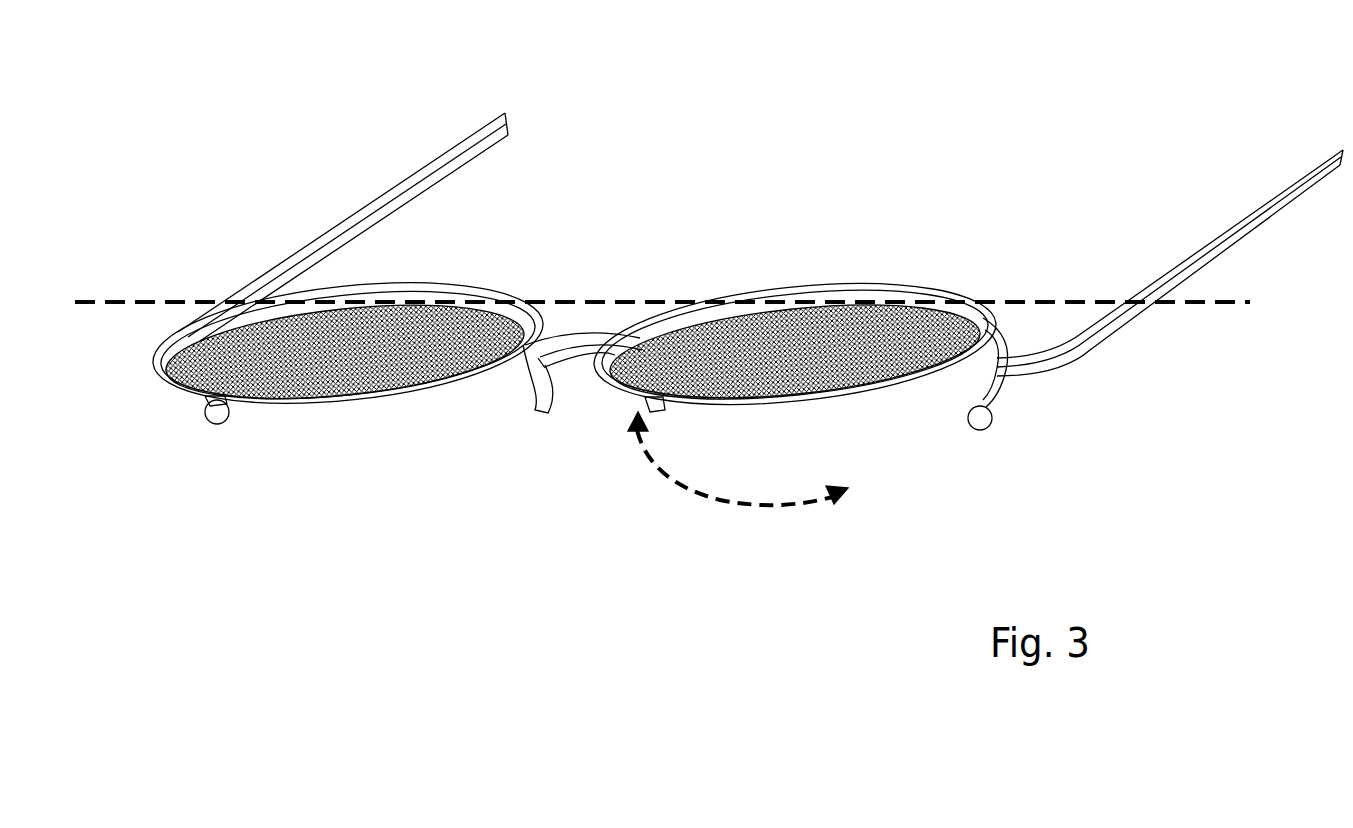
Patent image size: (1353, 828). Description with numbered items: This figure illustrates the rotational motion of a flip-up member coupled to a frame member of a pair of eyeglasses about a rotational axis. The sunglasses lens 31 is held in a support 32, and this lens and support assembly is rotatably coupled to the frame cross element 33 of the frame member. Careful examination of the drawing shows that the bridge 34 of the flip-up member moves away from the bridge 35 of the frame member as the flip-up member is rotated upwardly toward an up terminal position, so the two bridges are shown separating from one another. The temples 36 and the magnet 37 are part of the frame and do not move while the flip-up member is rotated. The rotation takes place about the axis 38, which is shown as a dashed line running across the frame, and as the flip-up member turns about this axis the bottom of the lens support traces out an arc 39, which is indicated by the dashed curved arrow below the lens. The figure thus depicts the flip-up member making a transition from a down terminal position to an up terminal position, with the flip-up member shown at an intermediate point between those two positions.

The sunglasses lens 31 is at (333, 380).
The support 32 is at (163, 387).
The frame cross element 33 is at (387, 284).
The bridge of the flip-up member 34 is at (587, 333).
The bridge of the frame member 35 is at (570, 358).
The temples 36 is at (375, 195).
The magnet 37 is at (217, 422).
The axis 38 is at (1057, 300).
The arc 39 is at (717, 500).